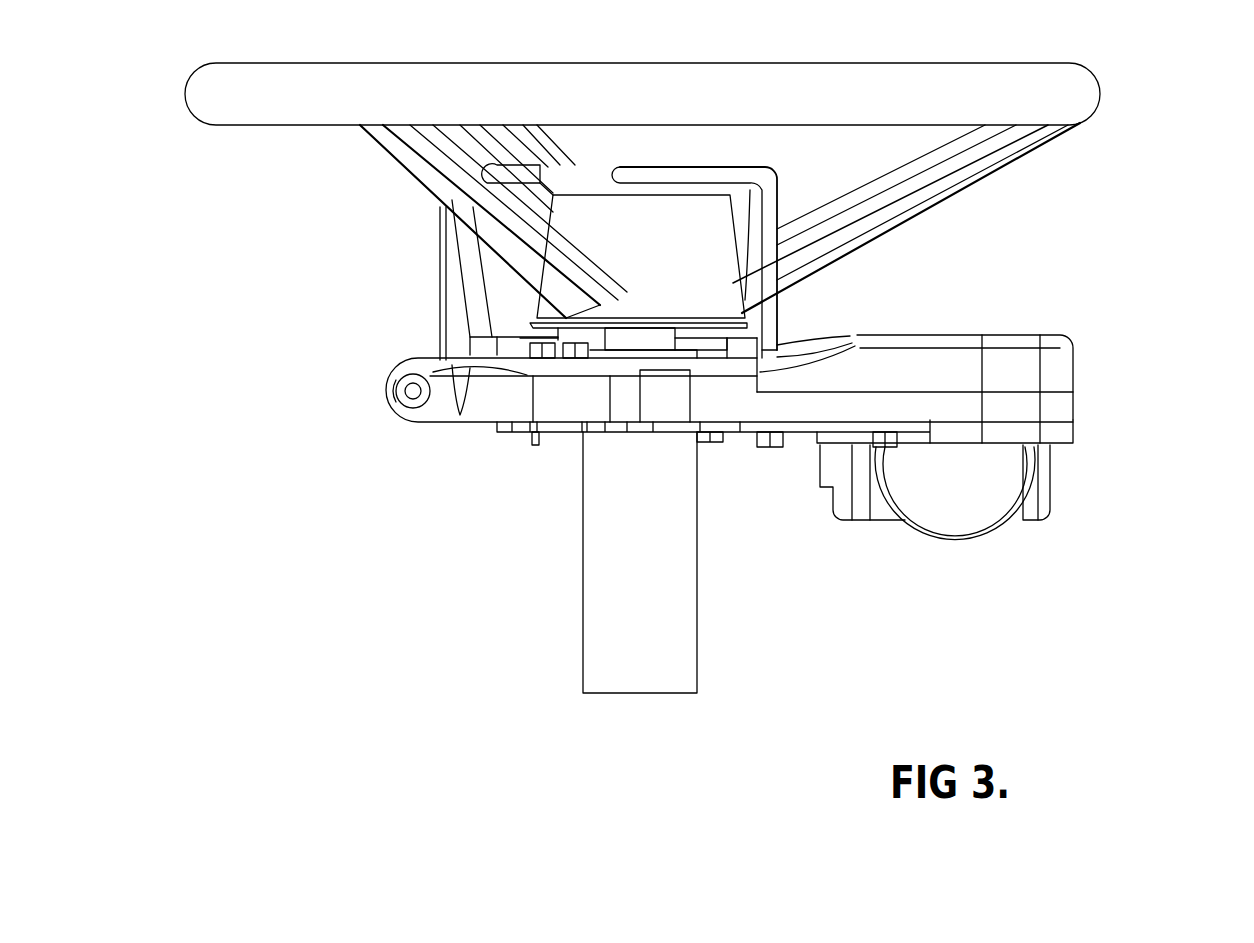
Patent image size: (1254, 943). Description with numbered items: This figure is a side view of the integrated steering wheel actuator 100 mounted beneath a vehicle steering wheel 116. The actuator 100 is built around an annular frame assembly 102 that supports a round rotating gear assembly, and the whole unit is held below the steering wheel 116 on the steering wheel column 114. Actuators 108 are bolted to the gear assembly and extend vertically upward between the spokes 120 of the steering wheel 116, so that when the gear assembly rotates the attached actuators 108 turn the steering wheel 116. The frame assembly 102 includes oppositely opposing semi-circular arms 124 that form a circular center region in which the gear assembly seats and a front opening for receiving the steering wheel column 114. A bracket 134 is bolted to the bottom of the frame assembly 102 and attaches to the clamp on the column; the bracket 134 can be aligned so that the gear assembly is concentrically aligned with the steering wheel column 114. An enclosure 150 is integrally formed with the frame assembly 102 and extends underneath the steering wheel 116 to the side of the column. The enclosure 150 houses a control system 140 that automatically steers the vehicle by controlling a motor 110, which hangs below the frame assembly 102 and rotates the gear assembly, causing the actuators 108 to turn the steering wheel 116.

The steering wheel actuator 100 is at (410, 562).
The frame assembly 102 is at (493, 402).
The actuators 108 is at (480, 270).
The motor 110 is at (965, 523).
The steering wheel column 114 is at (673, 627).
The steering wheel 116 is at (188, 97).
The spokes 120 is at (427, 182).
The semi-circular arms 124 is at (577, 410).
The bracket 134 is at (715, 432).
The control system 140 is at (1132, 385).
The enclosure 150 is at (937, 357).